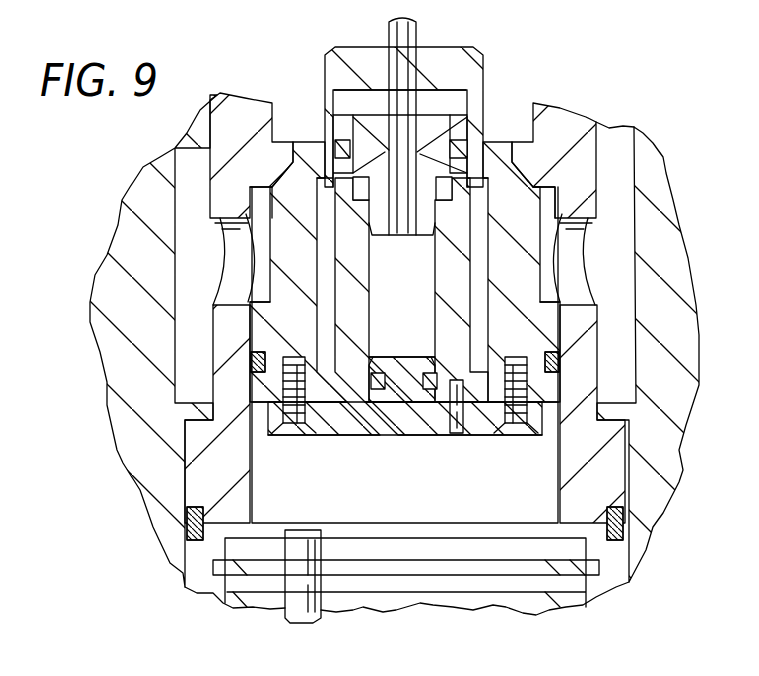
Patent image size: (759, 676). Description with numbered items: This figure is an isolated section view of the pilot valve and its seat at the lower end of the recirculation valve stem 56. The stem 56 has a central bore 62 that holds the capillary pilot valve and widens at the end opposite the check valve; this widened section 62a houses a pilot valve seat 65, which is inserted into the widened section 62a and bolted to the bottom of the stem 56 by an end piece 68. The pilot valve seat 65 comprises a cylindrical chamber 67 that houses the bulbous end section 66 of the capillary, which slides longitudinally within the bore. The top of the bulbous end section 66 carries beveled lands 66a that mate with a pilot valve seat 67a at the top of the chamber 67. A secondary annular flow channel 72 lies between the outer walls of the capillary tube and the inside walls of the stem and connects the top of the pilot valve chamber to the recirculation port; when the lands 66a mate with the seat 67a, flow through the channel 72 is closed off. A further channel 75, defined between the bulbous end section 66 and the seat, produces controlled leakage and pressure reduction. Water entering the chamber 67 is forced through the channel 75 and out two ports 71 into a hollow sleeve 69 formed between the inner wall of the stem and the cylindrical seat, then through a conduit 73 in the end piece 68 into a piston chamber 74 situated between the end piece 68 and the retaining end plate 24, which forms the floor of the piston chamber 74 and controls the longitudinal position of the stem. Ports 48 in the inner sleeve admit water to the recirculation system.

The retaining end plate 24 is at (422, 598).
The ports 48 is at (230, 220).
The stem 56 is at (250, 244).
The central bore 62 is at (420, 58).
The widened section 62a is at (325, 128).
The pilot valve seat 65 is at (546, 125).
The bulbous end section 66 is at (462, 215).
The beveled lands 66a is at (391, 228).
The cylindrical chamber 67 is at (372, 325).
The pilot valve seat 67a is at (428, 158).
The end piece 68 is at (406, 410).
The hollow sleeve 69 is at (323, 258).
The ports 71 is at (342, 138).
The annular flow channel 72 is at (387, 64).
The conduit 73 is at (358, 428).
The piston chamber 74 is at (414, 512).
The channel 75 is at (452, 240).